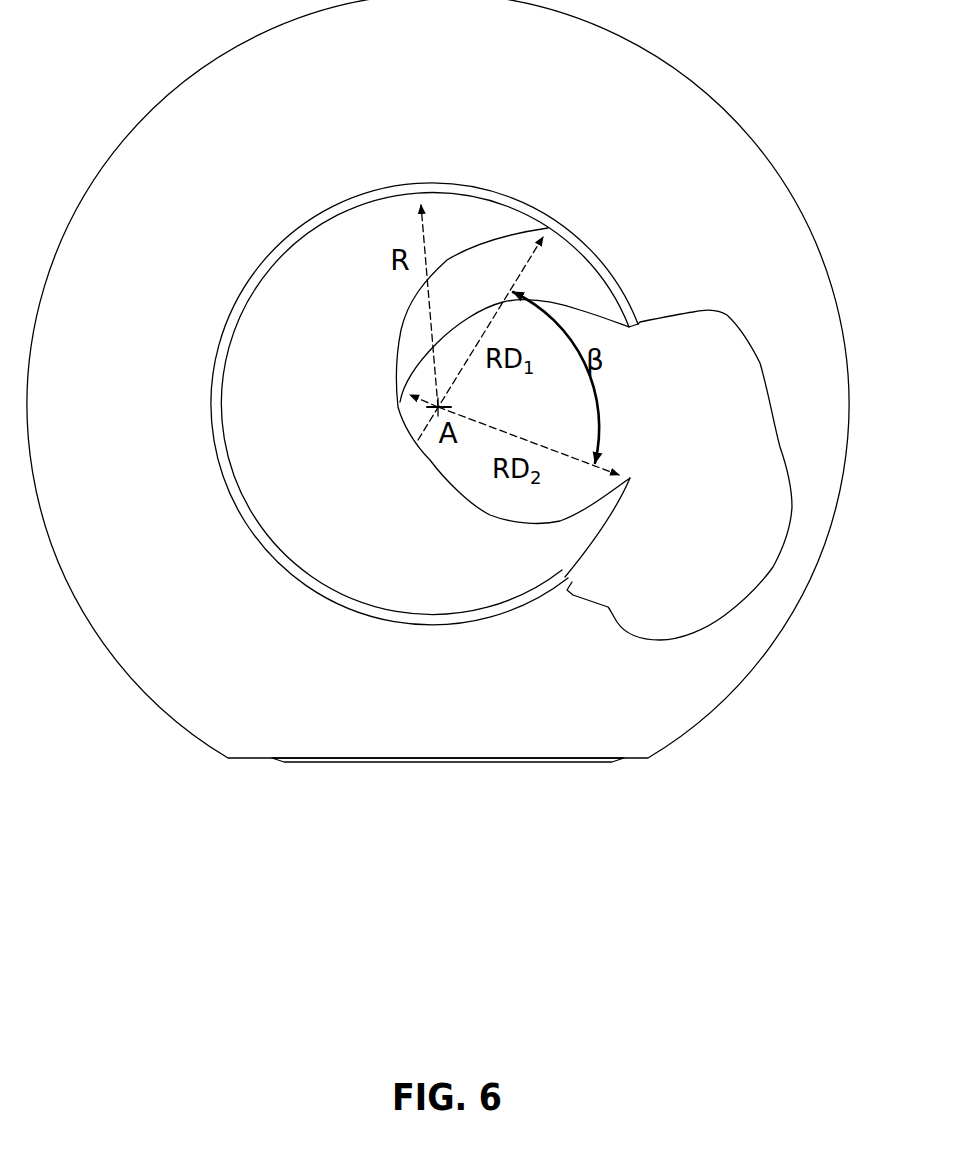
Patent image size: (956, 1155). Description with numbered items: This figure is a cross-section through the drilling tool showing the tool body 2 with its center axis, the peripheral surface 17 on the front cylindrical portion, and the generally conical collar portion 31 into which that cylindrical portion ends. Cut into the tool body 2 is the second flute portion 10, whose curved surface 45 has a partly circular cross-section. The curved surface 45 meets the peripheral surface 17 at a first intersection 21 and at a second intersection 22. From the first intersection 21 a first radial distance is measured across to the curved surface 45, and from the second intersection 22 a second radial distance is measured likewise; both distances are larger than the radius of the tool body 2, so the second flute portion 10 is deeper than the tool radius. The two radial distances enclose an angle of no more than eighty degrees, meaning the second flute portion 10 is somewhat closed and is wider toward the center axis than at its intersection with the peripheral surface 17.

The tool body 2 is at (411, 733).
The second flute portion 10 is at (621, 409).
The peripheral surface 17 is at (583, 253).
The first intersection 21 is at (548, 224).
The second intersection 22 is at (625, 482).
The collar portion 31 is at (138, 664).
The curved surface 45 is at (398, 331).